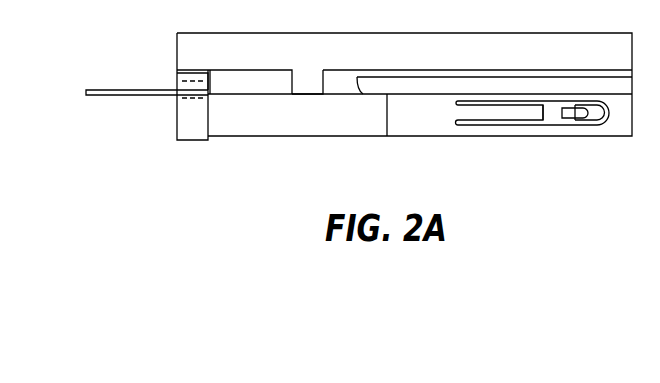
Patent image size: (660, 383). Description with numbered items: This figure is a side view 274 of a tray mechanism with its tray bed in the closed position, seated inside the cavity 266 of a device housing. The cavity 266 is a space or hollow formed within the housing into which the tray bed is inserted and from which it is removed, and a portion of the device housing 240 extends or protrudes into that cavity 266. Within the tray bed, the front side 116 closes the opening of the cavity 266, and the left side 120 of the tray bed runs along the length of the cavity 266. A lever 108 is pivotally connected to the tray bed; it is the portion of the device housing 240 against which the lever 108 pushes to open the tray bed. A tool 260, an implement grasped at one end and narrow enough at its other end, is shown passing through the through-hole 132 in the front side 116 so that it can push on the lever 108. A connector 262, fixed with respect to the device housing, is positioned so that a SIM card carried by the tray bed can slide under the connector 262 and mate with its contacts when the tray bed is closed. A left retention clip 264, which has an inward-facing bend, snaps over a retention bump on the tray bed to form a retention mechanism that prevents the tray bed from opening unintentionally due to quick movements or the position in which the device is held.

The lever 108 is at (242, 82).
The front side 116 is at (190, 127).
The left side 120 is at (293, 127).
The through-hole 132 is at (185, 98).
The portion of a device housing 240 is at (307, 79).
The tool 260 is at (109, 86).
The connector 262 is at (432, 86).
The left retention clip 264 is at (573, 124).
The cavity 266 is at (347, 82).
The side view 274 is at (119, 171).